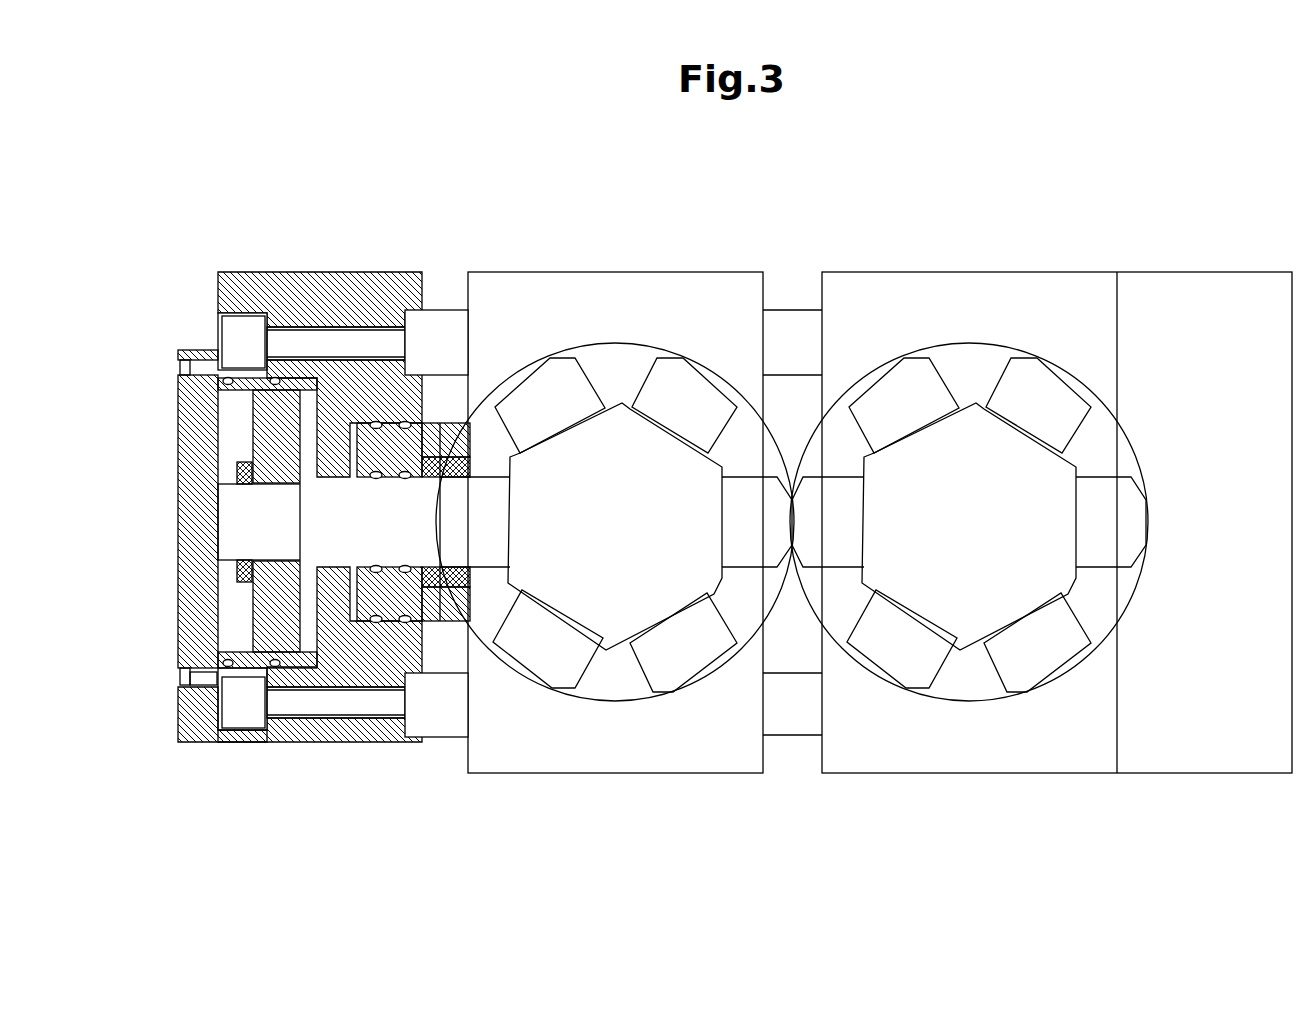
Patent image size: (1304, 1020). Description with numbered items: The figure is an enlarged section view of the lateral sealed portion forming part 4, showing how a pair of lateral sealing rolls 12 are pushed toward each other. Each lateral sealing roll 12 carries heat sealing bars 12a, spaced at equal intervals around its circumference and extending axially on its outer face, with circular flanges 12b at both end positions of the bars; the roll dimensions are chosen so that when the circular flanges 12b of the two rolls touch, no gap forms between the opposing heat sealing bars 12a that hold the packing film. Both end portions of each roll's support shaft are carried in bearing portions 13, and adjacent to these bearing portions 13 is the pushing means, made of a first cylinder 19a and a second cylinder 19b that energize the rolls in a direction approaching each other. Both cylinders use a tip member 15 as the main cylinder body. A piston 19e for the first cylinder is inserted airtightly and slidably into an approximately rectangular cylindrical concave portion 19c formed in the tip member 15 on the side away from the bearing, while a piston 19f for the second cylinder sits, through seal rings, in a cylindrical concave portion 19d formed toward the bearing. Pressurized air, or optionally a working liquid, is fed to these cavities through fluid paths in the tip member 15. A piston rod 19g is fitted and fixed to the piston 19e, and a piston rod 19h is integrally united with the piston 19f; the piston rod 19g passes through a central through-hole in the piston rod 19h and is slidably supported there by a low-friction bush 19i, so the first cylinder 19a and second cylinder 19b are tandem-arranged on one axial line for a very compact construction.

The lateral sealed portion forming part 4 is at (864, 516).
The lateral sealing roll 12 is at (664, 329).
The heat sealing bar 12a is at (528, 357).
The circular flange 12b is at (623, 702).
The bearing portion 13 is at (604, 272).
The tip member 15 is at (218, 272).
The first cylinder 19a is at (229, 629).
The second cylinder 19b is at (350, 457).
The concave portion for the first cylinder 19c is at (252, 670).
The concave portion for the second cylinder 19d is at (347, 622).
The piston for the first cylinder 19e is at (297, 450).
The piston for the second cylinder 19f is at (322, 445).
The piston rod for the first cylinder 19g is at (248, 543).
The piston rod for the second cylinder 19h is at (430, 645).
The low-friction bush 19i is at (445, 372).